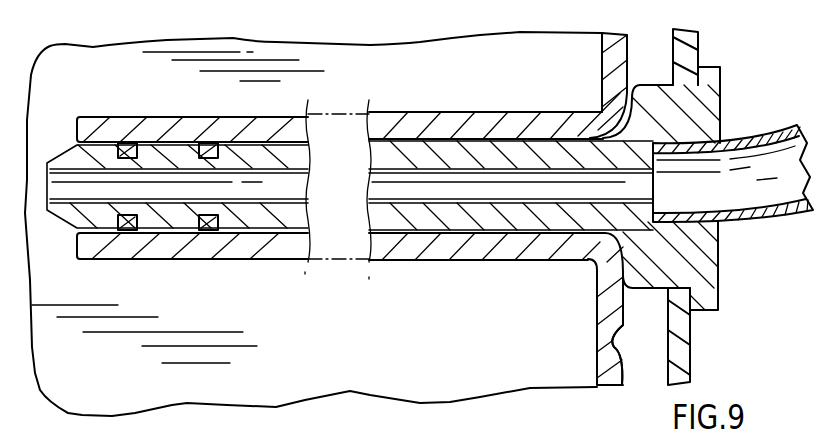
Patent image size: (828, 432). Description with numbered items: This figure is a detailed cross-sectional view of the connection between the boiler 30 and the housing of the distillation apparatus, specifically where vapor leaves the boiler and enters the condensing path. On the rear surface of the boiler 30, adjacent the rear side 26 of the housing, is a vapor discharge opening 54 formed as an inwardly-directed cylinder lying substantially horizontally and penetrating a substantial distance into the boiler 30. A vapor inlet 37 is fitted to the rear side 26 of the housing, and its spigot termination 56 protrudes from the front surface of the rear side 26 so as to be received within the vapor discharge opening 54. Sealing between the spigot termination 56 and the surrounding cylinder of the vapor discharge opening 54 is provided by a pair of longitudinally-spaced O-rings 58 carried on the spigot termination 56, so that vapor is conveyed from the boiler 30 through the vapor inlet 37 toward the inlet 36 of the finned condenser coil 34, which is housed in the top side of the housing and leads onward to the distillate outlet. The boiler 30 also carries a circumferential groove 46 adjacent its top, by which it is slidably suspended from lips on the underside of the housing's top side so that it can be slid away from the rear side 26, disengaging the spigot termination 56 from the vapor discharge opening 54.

The rear side 26 is at (700, 48).
The boiler 30 is at (598, 95).
The finned condenser coil 34 is at (383, 427).
The inlet 36 is at (772, 128).
The vapor inlet 37 is at (722, 98).
The circumferential groove 46 is at (623, 341).
The vapor discharge opening 54 is at (203, 259).
The spigot termination 56 is at (345, 198).
The O-rings 58 is at (205, 138).